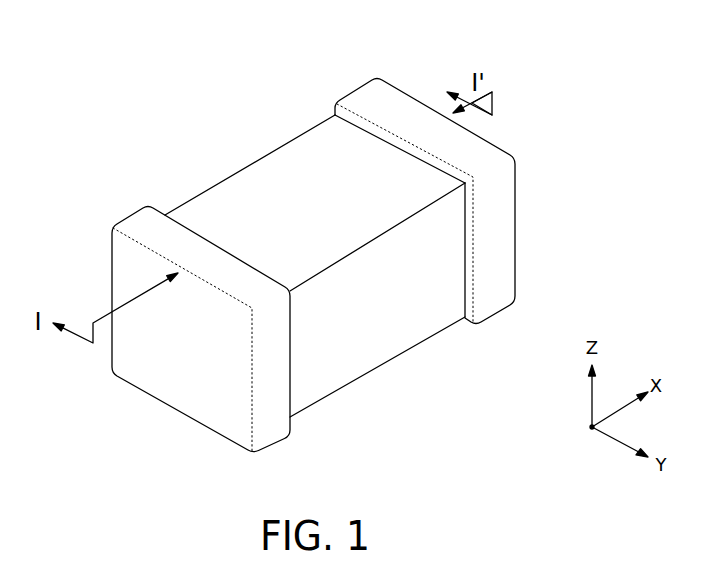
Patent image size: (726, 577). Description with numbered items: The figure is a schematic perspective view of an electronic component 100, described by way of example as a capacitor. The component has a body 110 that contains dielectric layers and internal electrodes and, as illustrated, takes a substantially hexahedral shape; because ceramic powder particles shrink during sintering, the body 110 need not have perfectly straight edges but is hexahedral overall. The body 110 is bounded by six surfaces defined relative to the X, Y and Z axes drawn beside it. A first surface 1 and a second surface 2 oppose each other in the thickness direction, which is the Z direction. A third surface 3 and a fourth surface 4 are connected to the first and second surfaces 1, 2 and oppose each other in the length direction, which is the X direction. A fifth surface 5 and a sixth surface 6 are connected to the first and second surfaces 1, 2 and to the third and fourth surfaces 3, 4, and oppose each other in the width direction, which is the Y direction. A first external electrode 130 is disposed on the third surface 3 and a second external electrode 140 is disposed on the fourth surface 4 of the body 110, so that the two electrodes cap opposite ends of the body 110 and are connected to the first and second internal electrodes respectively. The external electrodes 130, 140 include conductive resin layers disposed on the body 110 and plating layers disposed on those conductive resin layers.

The electronic component 100 is at (150, 33).
The body 110 is at (267, 170).
The first external electrode 130 is at (131, 208).
The second external electrode 140 is at (360, 93).
The first surface 1 is at (375, 381).
The second surface 2 is at (322, 170).
The third surface 3 is at (172, 380).
The fourth surface 4 is at (424, 89).
The fifth surface 5 is at (401, 318).
The sixth surface 6 is at (190, 180).